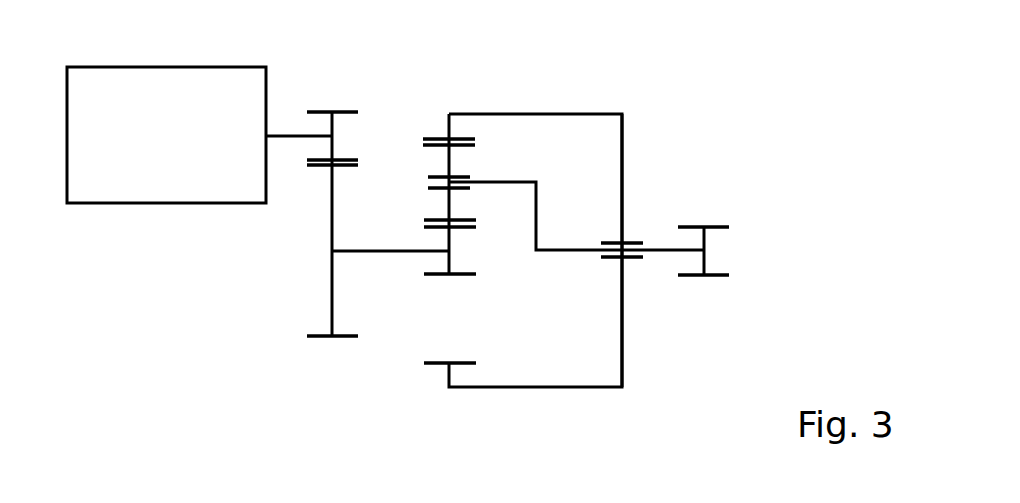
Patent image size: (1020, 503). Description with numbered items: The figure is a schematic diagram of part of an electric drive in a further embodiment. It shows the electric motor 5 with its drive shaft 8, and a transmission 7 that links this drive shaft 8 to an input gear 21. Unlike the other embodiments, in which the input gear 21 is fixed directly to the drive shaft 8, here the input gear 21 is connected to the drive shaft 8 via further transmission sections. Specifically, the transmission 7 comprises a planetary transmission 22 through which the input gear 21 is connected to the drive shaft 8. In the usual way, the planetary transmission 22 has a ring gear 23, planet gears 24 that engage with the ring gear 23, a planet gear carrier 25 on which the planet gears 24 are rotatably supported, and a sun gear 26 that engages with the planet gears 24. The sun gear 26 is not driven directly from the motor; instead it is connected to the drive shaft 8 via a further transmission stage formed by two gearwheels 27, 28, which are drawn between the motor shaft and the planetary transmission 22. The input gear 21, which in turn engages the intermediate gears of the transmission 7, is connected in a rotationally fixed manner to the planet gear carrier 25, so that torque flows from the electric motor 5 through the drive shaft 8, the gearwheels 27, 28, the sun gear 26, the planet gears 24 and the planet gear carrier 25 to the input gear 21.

The electric motor 5 is at (171, 150).
The transmission 7 is at (273, 280).
The drive shaft 8 is at (293, 130).
The input gear 21 is at (704, 260).
The planetary transmission 22 is at (614, 103).
The ring gear 23 is at (622, 178).
The planet gears 24 is at (449, 159).
The planet gear carrier 25 is at (536, 216).
The sun gear 26 is at (449, 262).
The gearwheel 27 is at (332, 195).
The gearwheel 28 is at (332, 130).